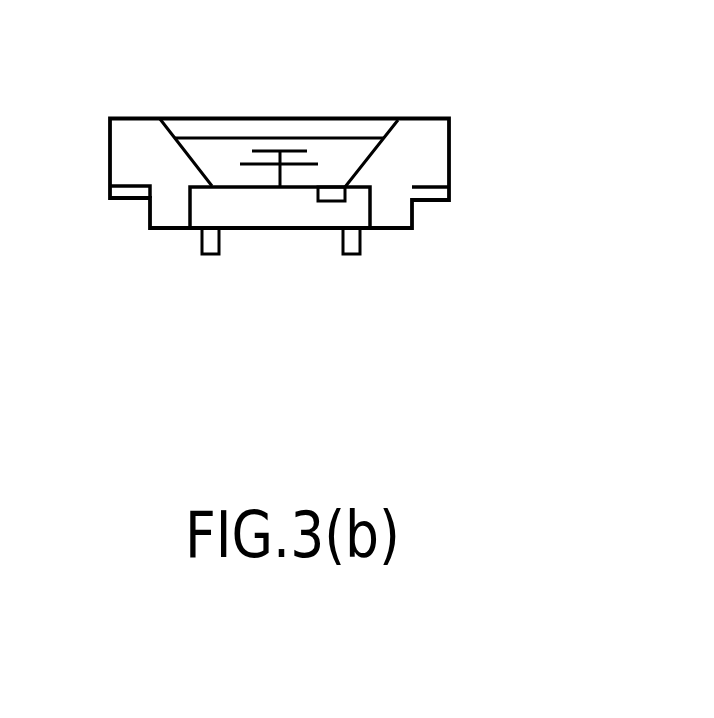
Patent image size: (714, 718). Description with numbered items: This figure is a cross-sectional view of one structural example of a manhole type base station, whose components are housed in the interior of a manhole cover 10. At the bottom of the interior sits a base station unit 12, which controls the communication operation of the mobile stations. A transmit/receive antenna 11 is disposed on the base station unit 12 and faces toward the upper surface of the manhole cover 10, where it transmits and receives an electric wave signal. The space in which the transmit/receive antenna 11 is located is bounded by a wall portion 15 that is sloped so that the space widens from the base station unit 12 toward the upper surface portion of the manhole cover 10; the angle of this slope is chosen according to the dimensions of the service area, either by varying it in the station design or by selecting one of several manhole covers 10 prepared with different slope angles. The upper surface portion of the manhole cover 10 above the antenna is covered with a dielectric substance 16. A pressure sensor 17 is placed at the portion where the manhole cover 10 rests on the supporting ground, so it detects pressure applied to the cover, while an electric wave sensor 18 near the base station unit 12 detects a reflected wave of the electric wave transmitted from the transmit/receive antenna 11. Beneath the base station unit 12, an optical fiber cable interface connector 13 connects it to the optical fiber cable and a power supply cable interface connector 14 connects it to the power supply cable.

The manhole cover 10 is at (451, 133).
The transmit/receive antenna 11 is at (290, 151).
The base station unit 12 is at (283, 215).
The optical fiber cable interface connector 13 is at (203, 252).
The power supply cable interface connector 14 is at (355, 257).
The wall portion 15 is at (196, 152).
The dielectric substance 16 is at (264, 138).
The pressure sensor 17 is at (125, 199).
The electric wave sensor 18 is at (340, 196).